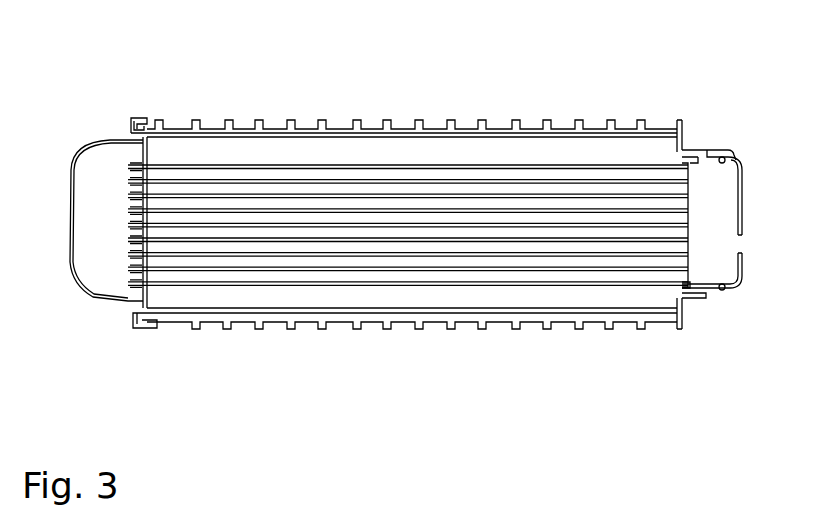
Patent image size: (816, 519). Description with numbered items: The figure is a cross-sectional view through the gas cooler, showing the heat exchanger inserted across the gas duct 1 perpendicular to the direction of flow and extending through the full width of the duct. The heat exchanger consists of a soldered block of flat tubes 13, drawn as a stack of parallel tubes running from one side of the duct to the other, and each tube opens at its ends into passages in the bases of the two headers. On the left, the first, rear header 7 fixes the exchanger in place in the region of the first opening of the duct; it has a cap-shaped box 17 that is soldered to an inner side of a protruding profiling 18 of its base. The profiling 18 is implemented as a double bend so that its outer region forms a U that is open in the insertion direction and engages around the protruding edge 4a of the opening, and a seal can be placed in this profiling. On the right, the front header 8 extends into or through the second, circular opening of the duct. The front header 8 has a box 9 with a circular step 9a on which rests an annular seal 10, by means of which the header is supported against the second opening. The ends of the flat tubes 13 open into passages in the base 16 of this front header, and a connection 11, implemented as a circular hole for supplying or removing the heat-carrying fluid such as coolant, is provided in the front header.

The gas duct 1 is at (540, 322).
The protruding edge 4a is at (150, 118).
The first header 7 is at (61, 318).
The header 8 is at (745, 292).
The box 9 is at (742, 203).
The step 9a is at (738, 154).
The annular seal 10 is at (724, 158).
The connection 11 is at (744, 247).
The flat tubes 13 is at (268, 180).
The base 16 is at (681, 256).
The cap-shaped box 17 is at (85, 153).
The profiling 18 is at (121, 106).